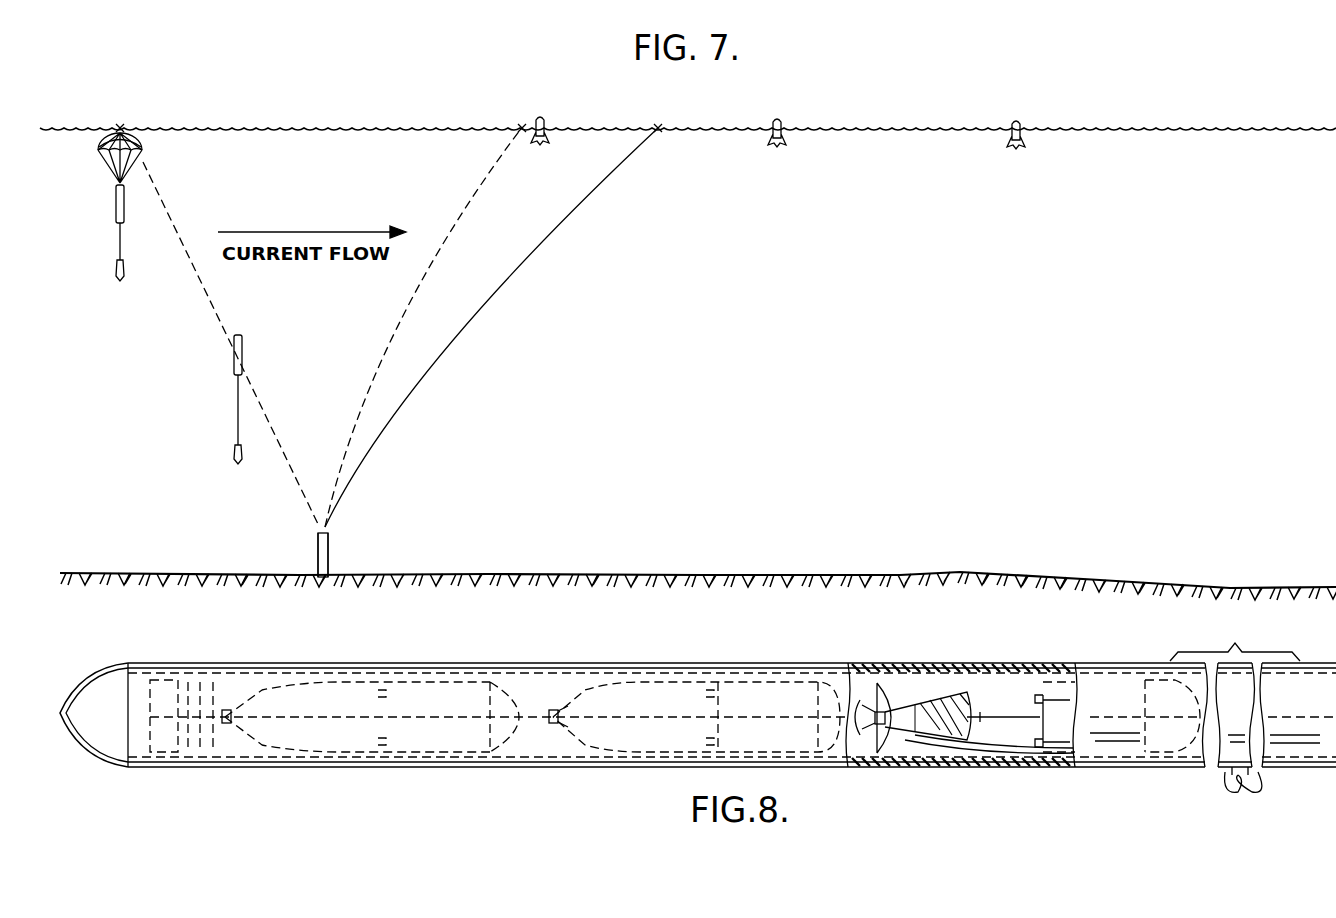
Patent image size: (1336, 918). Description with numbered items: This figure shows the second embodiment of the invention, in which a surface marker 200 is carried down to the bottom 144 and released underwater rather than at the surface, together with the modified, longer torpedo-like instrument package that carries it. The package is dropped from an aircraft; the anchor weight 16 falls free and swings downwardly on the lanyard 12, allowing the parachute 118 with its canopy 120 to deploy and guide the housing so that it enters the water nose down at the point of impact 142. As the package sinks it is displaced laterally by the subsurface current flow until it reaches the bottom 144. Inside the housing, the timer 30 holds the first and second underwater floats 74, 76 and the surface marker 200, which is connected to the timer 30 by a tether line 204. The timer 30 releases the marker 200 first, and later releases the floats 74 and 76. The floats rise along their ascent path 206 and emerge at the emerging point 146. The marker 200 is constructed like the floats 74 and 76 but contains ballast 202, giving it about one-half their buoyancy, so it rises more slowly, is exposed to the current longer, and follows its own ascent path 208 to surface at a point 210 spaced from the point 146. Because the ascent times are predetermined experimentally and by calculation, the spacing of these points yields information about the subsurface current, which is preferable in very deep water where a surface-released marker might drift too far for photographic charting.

In FIG. 7, the lanyard 12 is at (122, 238).
In FIG. 7, the anchor weight 16 is at (125, 273).
In FIG. 8, the timer 30 is at (199, 700).
In FIG. 7, the first underwater float 74 is at (777, 120).
In FIG. 8, the first underwater float 74 is at (745, 700).
In FIG. 7, the second underwater float 76 is at (540, 118).
In FIG. 8, the second underwater float 76 is at (407, 703).
In FIG. 7, the parachute 118 is at (98, 141).
In FIG. 7, the canopy 120 is at (128, 140).
In FIG. 7, the point of impact 142 is at (119, 127).
In FIG. 7, the bottom 144 is at (337, 577).
In FIG. 7, the emerging point 146 is at (518, 128).
In FIG. 7, the surface marker 200 is at (1015, 122).
In FIG. 8, the surface marker 200 is at (1055, 700).
In FIG. 8, the ballast 202 is at (945, 712).
In FIG. 8, the tether line 204 is at (882, 752).
In FIG. 7, the ascent path 206 is at (390, 333).
In FIG. 7, the ascent path 208 is at (497, 305).
In FIG. 7, the point 210 is at (660, 128).